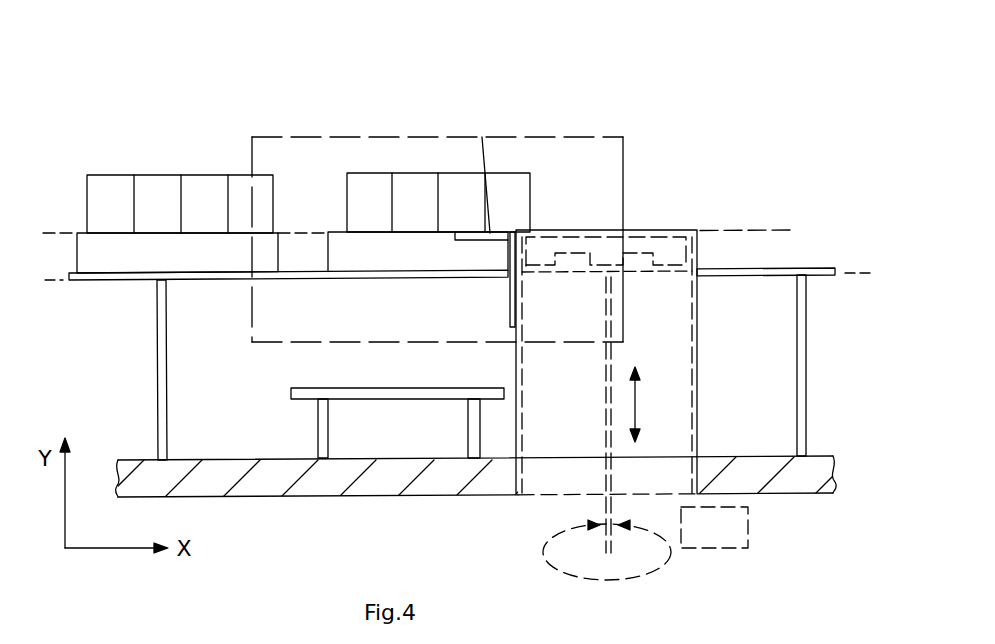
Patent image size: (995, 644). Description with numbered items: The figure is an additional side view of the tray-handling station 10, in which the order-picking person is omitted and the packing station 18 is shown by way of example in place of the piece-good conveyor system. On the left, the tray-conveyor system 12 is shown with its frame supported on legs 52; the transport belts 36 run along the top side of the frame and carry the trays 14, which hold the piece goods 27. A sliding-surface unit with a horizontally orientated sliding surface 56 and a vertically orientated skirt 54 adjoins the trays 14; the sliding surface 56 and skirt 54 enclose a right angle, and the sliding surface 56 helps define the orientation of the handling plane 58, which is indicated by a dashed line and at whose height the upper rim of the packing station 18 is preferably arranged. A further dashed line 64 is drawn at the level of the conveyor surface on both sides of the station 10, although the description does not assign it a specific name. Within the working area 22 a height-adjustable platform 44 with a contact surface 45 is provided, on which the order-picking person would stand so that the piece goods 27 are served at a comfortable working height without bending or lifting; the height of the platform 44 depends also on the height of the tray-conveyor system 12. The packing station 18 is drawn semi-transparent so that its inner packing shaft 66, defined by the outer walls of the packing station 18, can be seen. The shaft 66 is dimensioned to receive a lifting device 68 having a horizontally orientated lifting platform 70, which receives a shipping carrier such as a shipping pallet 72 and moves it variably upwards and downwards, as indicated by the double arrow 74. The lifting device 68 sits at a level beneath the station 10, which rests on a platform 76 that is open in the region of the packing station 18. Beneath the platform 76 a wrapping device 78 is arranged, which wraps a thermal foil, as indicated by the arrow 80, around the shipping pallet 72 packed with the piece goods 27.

The station 10 is at (296, 122).
The tray-conveyor system 12 is at (818, 258).
The trays 14 is at (153, 261).
The packing station 18 is at (712, 356).
The working area 22 is at (625, 148).
The piece goods 27 is at (98, 219).
The transport belts 36 is at (134, 284).
The platform 44 is at (296, 438).
The contact surface 45 is at (345, 388).
The legs 52 is at (157, 408).
The skirt 54 is at (510, 297).
The sliding surface 56 is at (482, 137).
The handling plane 58 is at (307, 233).
The transport plane 64 is at (51, 277).
The packing shaft 66 is at (556, 321).
The lifting device 68 is at (588, 480).
The lifting platform 70 is at (652, 276).
The shipping pallet 72 is at (632, 238).
The double arrow 74 is at (638, 395).
The platform 76 is at (787, 497).
The wrapping device 78 is at (704, 539).
The arrow 80 is at (663, 567).